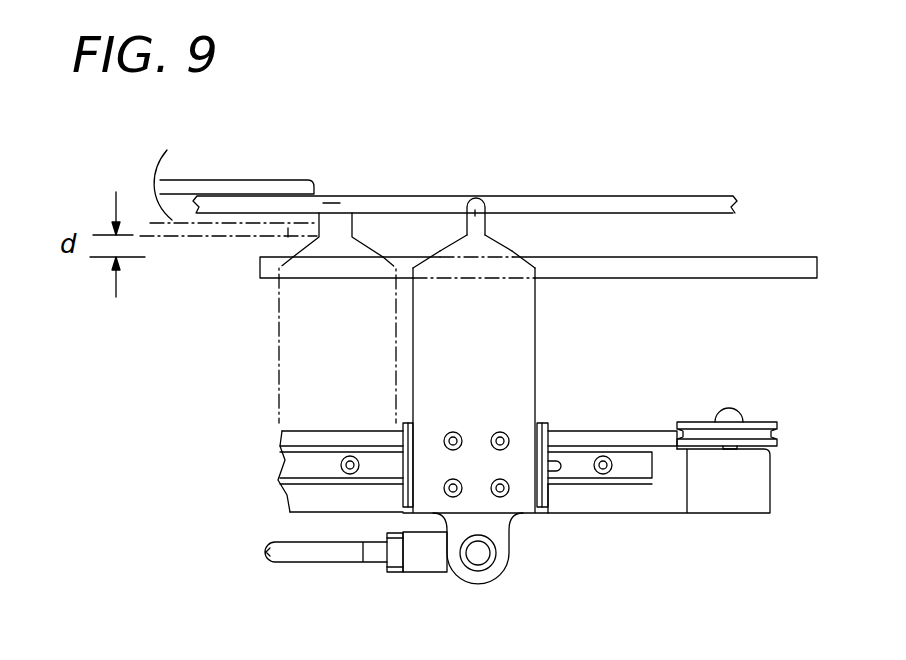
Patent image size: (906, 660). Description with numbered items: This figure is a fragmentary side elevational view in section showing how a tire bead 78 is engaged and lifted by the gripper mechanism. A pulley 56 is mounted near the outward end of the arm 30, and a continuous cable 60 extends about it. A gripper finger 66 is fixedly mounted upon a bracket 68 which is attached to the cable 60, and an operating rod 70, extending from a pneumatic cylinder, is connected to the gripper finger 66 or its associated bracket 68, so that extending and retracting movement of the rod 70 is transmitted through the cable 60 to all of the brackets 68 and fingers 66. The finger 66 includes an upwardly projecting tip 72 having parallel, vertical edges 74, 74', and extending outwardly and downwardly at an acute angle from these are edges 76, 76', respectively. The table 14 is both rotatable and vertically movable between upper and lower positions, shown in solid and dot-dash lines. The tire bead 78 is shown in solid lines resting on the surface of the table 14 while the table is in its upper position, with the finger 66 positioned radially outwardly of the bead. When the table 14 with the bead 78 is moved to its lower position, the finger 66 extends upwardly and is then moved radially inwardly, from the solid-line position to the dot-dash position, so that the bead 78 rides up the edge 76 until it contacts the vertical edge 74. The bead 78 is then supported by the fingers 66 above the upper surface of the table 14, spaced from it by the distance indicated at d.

The table 14 is at (688, 198).
The arm 30 is at (633, 500).
The pulley 56 is at (757, 420).
The cable 60 is at (603, 431).
The gripper finger 66 is at (520, 358).
The bracket 68 is at (543, 423).
The operating rod 70 is at (325, 550).
The tip 72 is at (476, 198).
The vertical edge 74 is at (441, 178).
The vertical edge 74' is at (522, 179).
The inclined edge 76 is at (320, 277).
The inclined edge 76' is at (511, 203).
The tire bead 78 is at (220, 190).